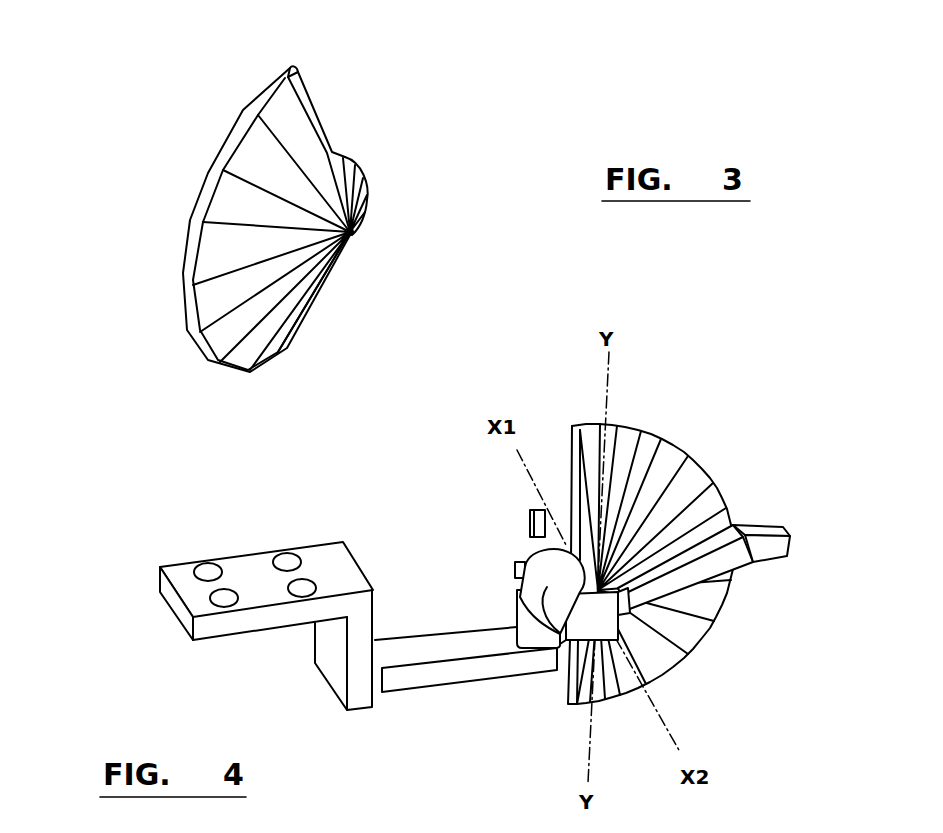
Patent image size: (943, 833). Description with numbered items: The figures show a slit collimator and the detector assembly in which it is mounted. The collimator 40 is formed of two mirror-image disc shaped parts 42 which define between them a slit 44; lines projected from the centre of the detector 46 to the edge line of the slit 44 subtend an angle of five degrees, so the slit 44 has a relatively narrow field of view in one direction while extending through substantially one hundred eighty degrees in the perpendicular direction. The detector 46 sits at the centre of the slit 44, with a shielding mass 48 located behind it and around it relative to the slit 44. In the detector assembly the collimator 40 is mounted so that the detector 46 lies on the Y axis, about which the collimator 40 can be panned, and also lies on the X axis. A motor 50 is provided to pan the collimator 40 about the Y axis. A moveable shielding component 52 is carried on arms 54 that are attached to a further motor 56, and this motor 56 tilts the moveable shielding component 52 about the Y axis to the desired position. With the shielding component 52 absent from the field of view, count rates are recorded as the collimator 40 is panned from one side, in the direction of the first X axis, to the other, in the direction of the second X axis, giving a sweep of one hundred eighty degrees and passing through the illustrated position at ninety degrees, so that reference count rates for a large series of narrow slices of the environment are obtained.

In FIG. 3, the collimator 40 is at (277, 215).
In FIG. 4, the collimator 40 is at (659, 568).
In FIG. 3, the disc shaped parts 42 is at (197, 197).
In FIG. 3, the slit 44 is at (280, 80).
In FIG. 3, the detector 46 is at (352, 235).
In FIG. 4, the detector 46 is at (583, 601).
In FIG. 3, the shielding mass 48 is at (370, 197).
In FIG. 4, the motor 50 is at (527, 618).
In FIG. 4, the moveable shielding component 52 is at (775, 525).
In FIG. 4, the arms 54 is at (690, 578).
In FIG. 4, the motor 56 is at (540, 566).